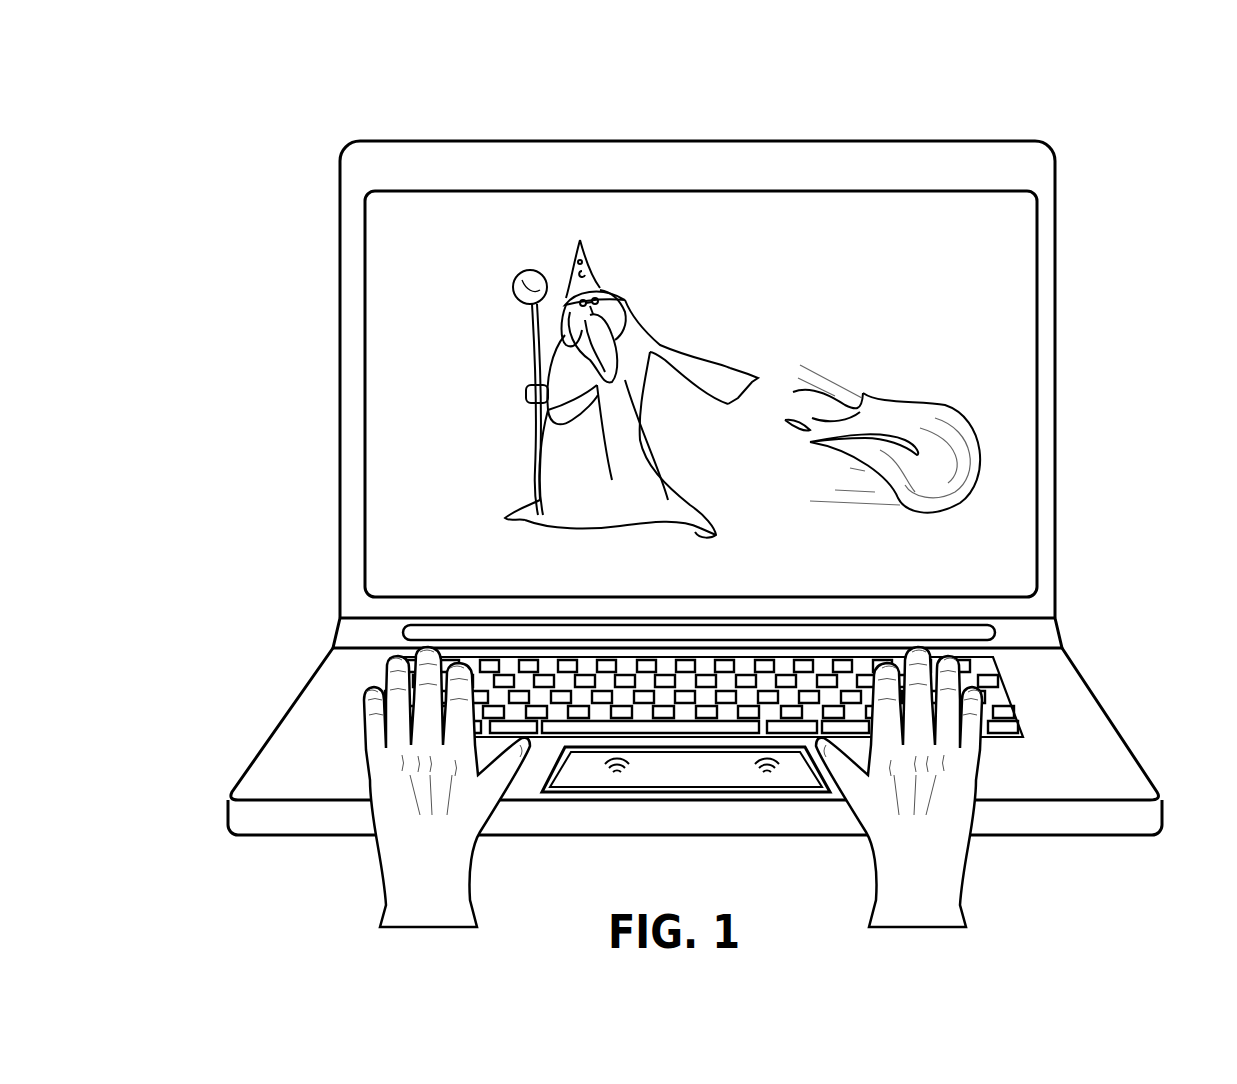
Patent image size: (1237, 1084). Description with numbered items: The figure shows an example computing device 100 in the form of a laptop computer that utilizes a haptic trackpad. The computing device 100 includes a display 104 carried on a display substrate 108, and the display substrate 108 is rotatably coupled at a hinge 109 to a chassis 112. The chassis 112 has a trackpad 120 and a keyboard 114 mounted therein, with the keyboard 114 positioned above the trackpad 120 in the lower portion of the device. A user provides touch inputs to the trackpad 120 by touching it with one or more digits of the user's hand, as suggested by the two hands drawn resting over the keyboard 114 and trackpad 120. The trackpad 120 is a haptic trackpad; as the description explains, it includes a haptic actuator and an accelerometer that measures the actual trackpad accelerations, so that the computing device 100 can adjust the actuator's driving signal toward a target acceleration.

The computing device 100 is at (245, 120).
The display 104 is at (956, 285).
The display substrate 108 is at (338, 258).
The hinge 109 is at (1072, 627).
The chassis 112 is at (1150, 778).
The keyboard 114 is at (372, 672).
The trackpad 120 is at (722, 775).